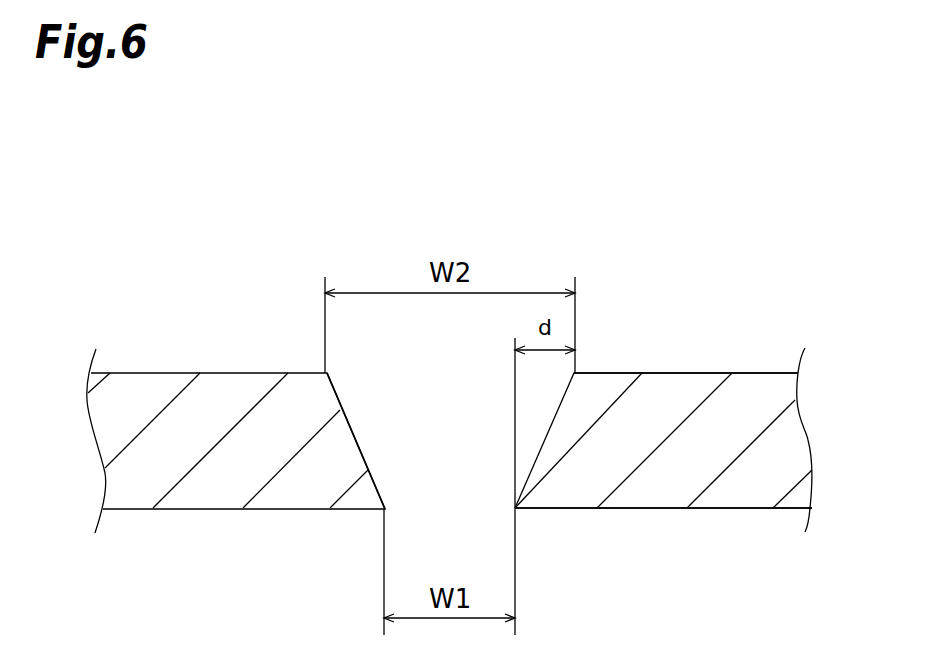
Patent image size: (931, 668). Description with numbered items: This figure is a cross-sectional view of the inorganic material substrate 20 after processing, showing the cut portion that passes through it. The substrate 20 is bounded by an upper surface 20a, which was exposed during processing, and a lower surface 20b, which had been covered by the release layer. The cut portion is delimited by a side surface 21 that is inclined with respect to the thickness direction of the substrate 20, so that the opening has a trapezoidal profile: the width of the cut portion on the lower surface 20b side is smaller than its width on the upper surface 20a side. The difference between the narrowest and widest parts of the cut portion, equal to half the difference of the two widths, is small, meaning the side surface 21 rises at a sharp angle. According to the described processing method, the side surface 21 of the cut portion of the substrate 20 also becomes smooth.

The substrate 20 is at (689, 444).
The upper surface 20a is at (712, 373).
The lower surface 20b is at (712, 509).
The side surface 21 is at (353, 437).